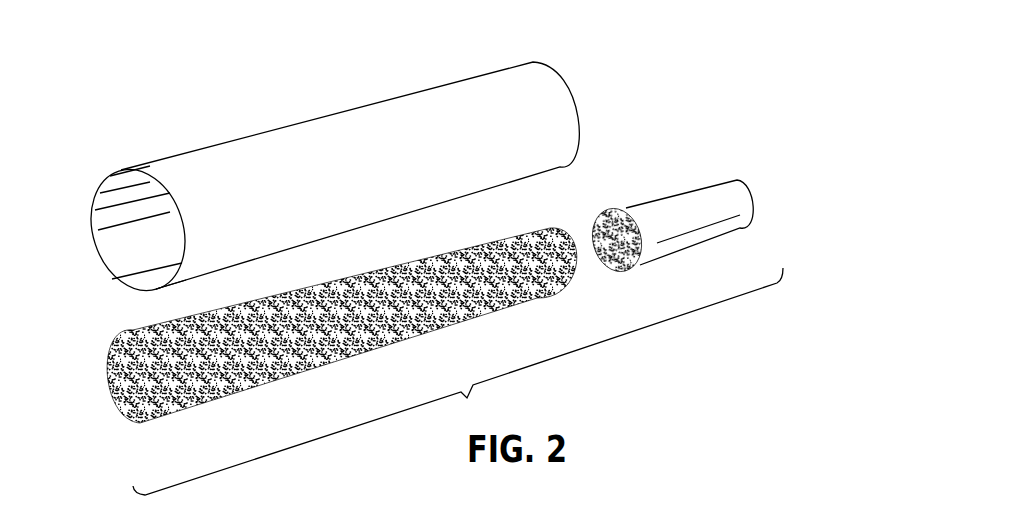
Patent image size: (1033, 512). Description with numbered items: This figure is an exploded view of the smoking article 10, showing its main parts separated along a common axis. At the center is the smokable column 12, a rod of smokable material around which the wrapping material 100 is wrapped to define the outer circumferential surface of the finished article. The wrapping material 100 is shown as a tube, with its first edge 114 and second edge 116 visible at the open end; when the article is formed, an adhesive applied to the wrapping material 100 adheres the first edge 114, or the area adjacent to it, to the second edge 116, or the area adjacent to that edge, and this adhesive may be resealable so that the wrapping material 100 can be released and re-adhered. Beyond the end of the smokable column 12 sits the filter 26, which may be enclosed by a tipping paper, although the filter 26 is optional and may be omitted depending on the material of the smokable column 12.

The smoking article 10 is at (291, 97).
The wrapping material 100 is at (424, 108).
The second edge 116 is at (112, 279).
The first edge 114 is at (158, 288).
The smokable column 12 is at (308, 372).
The filter 26 is at (680, 237).